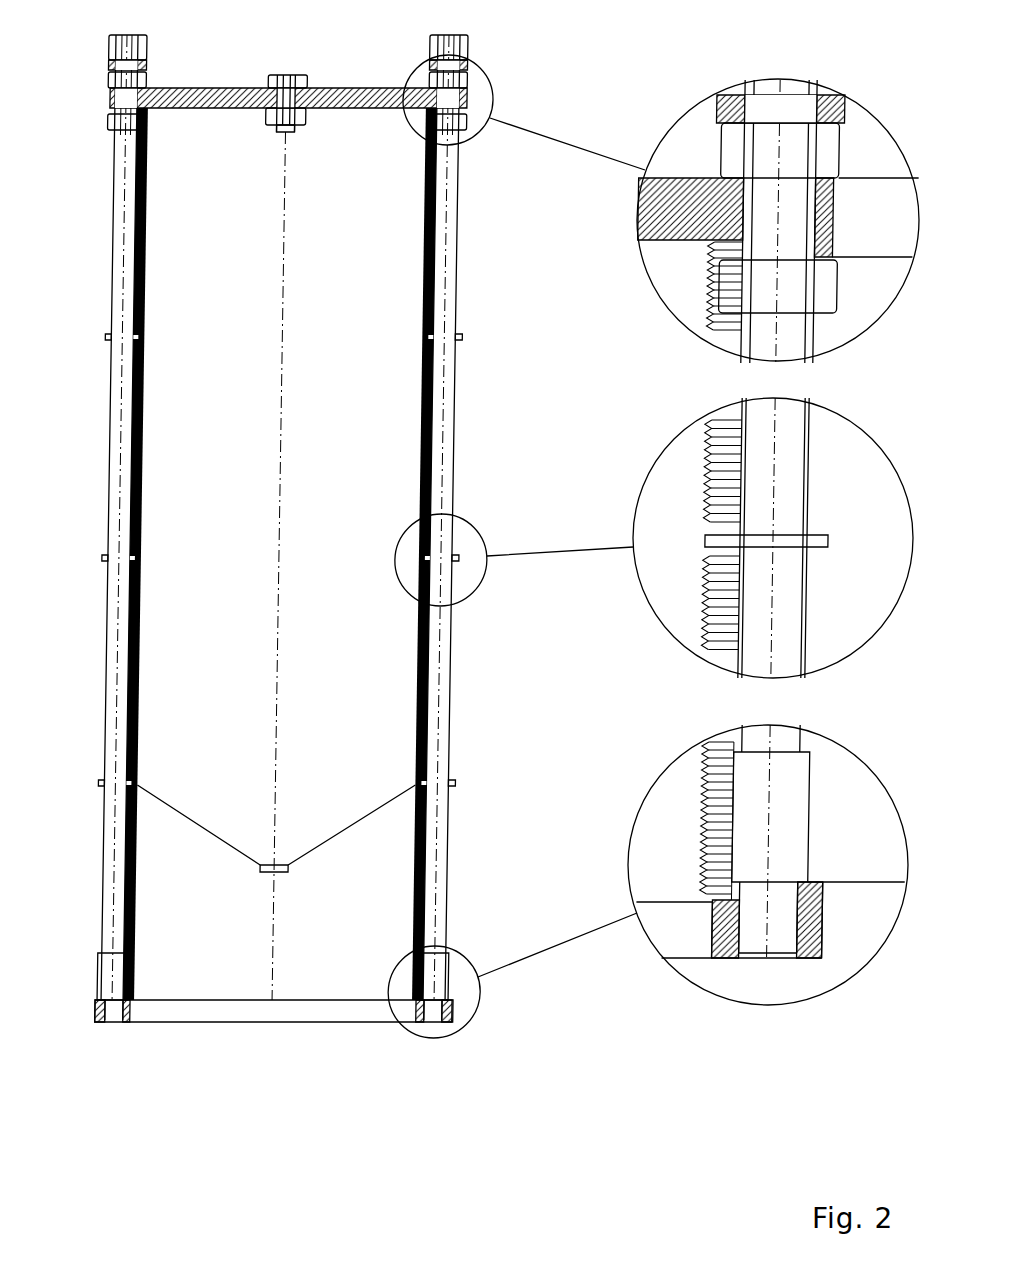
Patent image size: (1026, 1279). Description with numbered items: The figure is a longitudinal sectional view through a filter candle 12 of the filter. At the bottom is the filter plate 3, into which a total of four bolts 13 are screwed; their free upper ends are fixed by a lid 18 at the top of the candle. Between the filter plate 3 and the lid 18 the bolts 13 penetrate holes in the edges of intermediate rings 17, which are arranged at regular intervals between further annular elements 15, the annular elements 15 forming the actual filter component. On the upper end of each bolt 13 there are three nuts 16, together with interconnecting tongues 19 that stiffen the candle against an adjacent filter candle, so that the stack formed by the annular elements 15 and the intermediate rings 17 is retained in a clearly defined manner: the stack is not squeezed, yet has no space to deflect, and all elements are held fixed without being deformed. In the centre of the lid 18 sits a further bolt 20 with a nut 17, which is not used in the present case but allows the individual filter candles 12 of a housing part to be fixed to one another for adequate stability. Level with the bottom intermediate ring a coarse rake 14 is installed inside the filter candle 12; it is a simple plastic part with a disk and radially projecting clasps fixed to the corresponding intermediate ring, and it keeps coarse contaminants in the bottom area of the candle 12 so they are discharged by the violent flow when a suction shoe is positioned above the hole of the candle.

The filter plate 3 is at (95, 1005).
The filter candle 12 is at (470, 300).
The bolt 13 is at (108, 872).
The coarse rake 14 is at (320, 851).
The annular element 15 is at (138, 308).
The nut 16 is at (104, 783).
The intermediate ring 17 is at (112, 48).
The lid 18 is at (108, 98).
The interconnecting tongue 19 is at (108, 65).
The bolt 20 is at (268, 78).